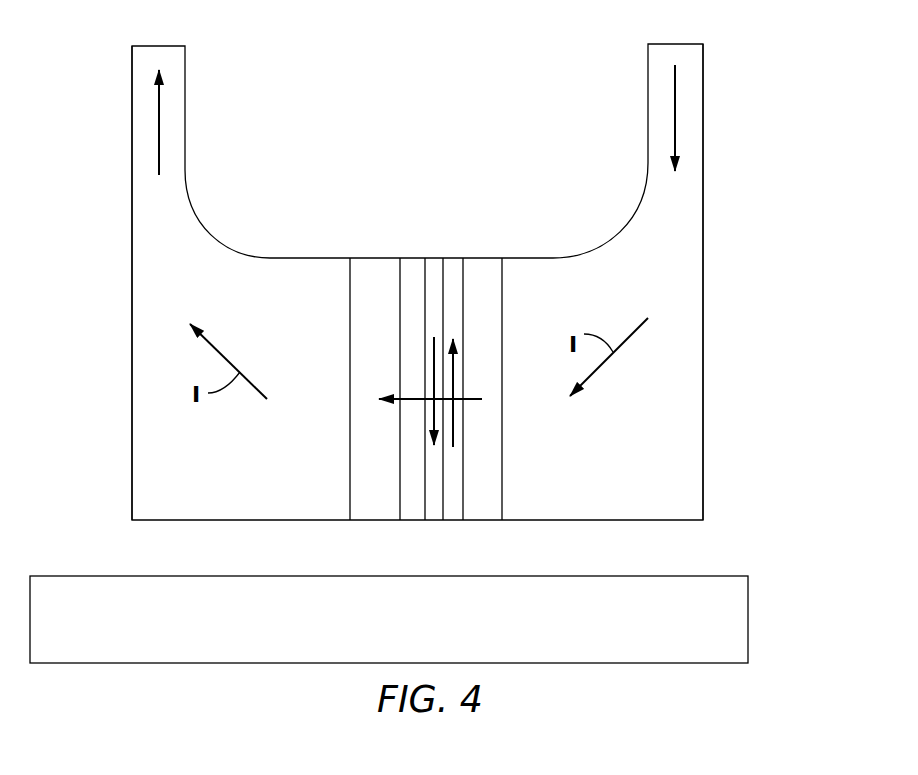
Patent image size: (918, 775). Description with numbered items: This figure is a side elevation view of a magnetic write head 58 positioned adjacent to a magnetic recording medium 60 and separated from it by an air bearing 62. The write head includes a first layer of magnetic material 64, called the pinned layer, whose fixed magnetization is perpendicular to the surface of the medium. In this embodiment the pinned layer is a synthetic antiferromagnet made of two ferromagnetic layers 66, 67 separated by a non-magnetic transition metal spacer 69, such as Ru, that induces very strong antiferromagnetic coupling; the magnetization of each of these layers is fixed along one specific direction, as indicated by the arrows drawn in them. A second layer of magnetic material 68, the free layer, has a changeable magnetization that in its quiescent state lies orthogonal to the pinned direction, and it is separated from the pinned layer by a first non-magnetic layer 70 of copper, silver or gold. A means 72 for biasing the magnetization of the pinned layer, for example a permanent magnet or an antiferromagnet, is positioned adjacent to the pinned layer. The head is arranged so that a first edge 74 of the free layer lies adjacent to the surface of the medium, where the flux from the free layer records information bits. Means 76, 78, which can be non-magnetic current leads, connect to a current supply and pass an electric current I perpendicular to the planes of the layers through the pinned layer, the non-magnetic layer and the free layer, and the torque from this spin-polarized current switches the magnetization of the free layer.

The magnetic write head 58 is at (721, 205).
The magnetic recording medium 60 is at (740, 627).
The air bearing 62 is at (127, 521).
The first layer of magnetic material 64 is at (463, 249).
The ferromagnetic layer 66 is at (433, 516).
The ferromagnetic layer 67 is at (457, 513).
The second layer of magnetic material 68 is at (370, 267).
The non-magnetic transition metal spacer 69 is at (448, 515).
The first non-magnetic layer 70 is at (410, 265).
The means for biasing the magnetization of the pinned layer 72 is at (480, 265).
The first edge of the free layer 74 is at (377, 517).
The means for connection to a current supply 76 is at (688, 367).
The means for connection to a current supply 78 is at (143, 348).